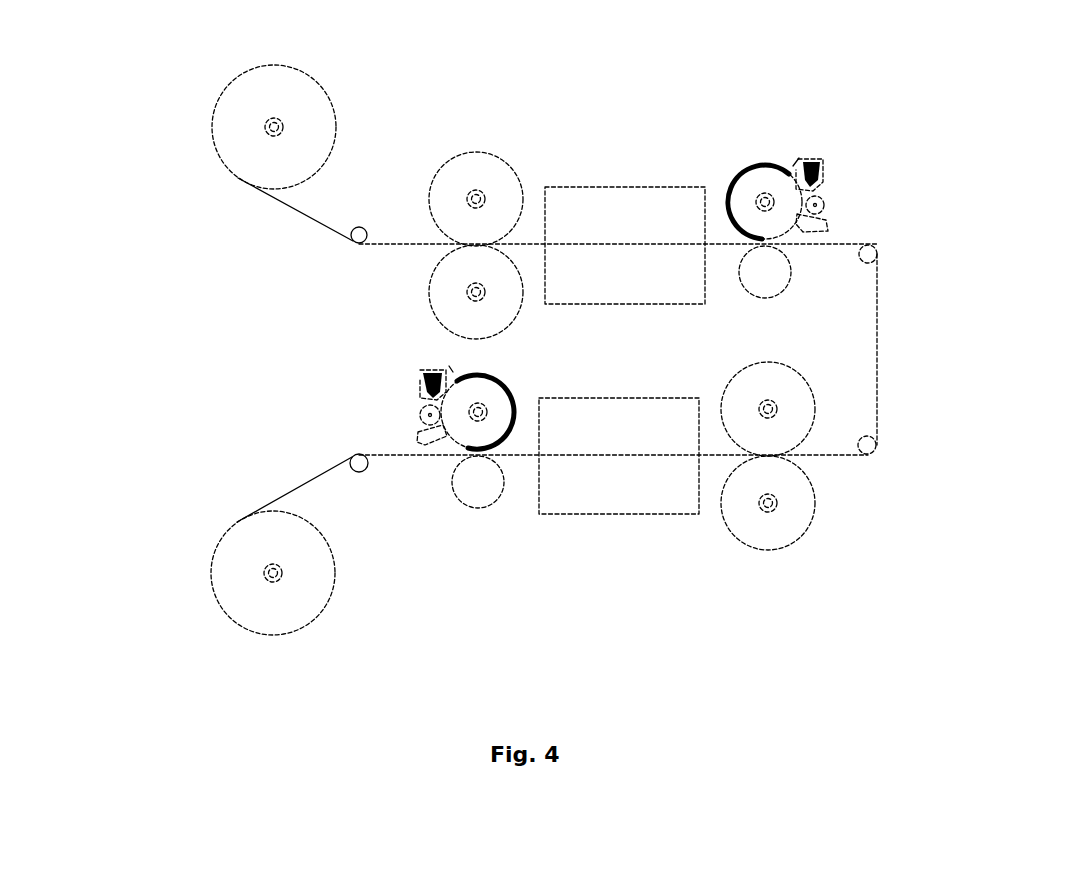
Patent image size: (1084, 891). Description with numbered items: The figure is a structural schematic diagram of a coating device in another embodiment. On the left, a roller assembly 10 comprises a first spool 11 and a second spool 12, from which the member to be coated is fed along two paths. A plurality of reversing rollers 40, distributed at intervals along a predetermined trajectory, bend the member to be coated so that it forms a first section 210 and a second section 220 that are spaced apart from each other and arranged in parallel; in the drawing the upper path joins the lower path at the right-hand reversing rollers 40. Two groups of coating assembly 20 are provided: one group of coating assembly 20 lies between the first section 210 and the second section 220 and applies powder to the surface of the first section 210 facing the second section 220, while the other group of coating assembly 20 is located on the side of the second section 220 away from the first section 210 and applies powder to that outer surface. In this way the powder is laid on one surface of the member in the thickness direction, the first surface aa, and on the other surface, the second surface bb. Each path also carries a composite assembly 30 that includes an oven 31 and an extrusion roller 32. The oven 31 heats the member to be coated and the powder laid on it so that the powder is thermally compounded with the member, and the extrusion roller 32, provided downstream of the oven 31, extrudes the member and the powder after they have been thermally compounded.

The roller assembly 10 is at (110, 263).
The first spool 11 is at (240, 548).
The second spool 12 is at (253, 145).
The coating assembly 20 is at (781, 134).
The composite assembly 30 is at (627, 50).
The oven 31 is at (624, 162).
The extrusion roller 32 is at (490, 132).
The reversing roller 40 is at (362, 224).
The first section 210 is at (833, 457).
The second section 220 is at (724, 244).
The first surface aa is at (828, 264).
The second surface bb is at (862, 227).